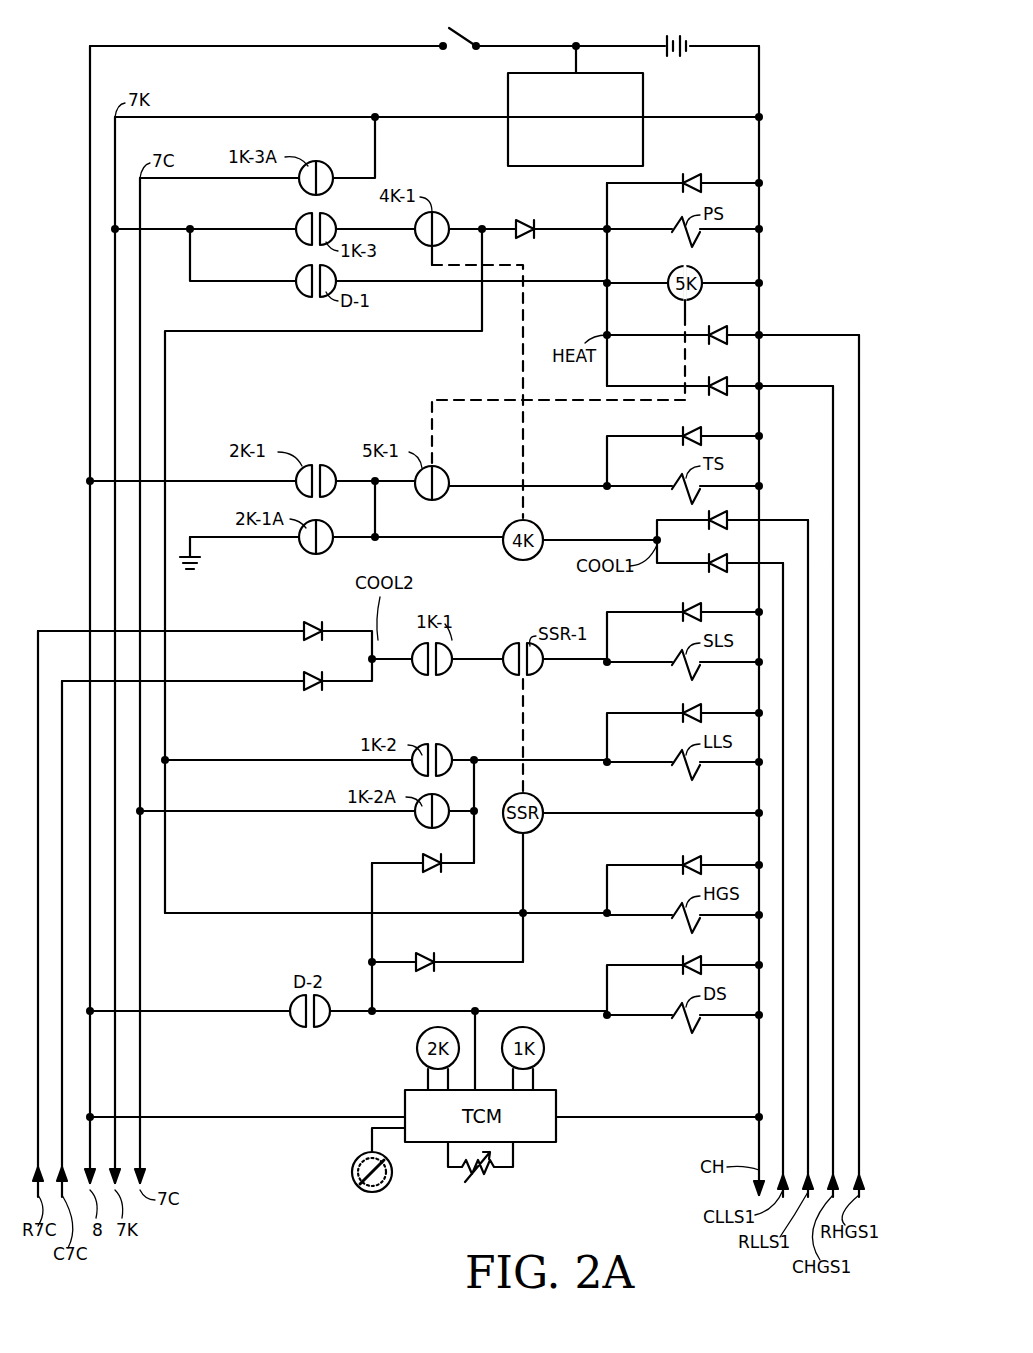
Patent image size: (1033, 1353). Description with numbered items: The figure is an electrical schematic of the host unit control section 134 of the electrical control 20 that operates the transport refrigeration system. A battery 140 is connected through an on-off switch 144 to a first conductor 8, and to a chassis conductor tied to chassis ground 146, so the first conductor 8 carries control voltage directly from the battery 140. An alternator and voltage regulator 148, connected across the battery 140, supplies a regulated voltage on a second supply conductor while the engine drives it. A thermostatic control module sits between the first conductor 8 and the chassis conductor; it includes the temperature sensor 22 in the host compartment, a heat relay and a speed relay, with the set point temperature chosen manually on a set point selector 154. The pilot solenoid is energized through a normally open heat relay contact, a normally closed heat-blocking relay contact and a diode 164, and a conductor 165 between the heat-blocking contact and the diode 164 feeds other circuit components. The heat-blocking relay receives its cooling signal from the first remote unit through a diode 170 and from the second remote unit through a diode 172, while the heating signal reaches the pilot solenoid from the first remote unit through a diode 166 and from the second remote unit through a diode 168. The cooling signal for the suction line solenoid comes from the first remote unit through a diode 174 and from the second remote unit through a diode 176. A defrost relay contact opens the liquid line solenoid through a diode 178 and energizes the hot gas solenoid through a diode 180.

The first conductor 8 is at (92, 46).
The electrical control section 134 is at (312, 37).
The battery 140 is at (682, 44).
The on-off switch 144 is at (460, 55).
The chassis ground 146 is at (202, 565).
The alternator and voltage regulator 148 is at (508, 146).
The set point selector 154 is at (352, 1160).
The diode 164 is at (523, 220).
The conductor 165 is at (418, 340).
The diode 166 is at (712, 398).
The diode 168 is at (712, 325).
The diode 170 is at (712, 578).
The diode 172 is at (735, 530).
The diode 174 is at (318, 693).
The diode 176 is at (313, 620).
The diode 178 is at (420, 858).
The diode 180 is at (430, 972).
The electrical control 20 is at (312, 1218).
The temperature sensor 22 is at (482, 1178).